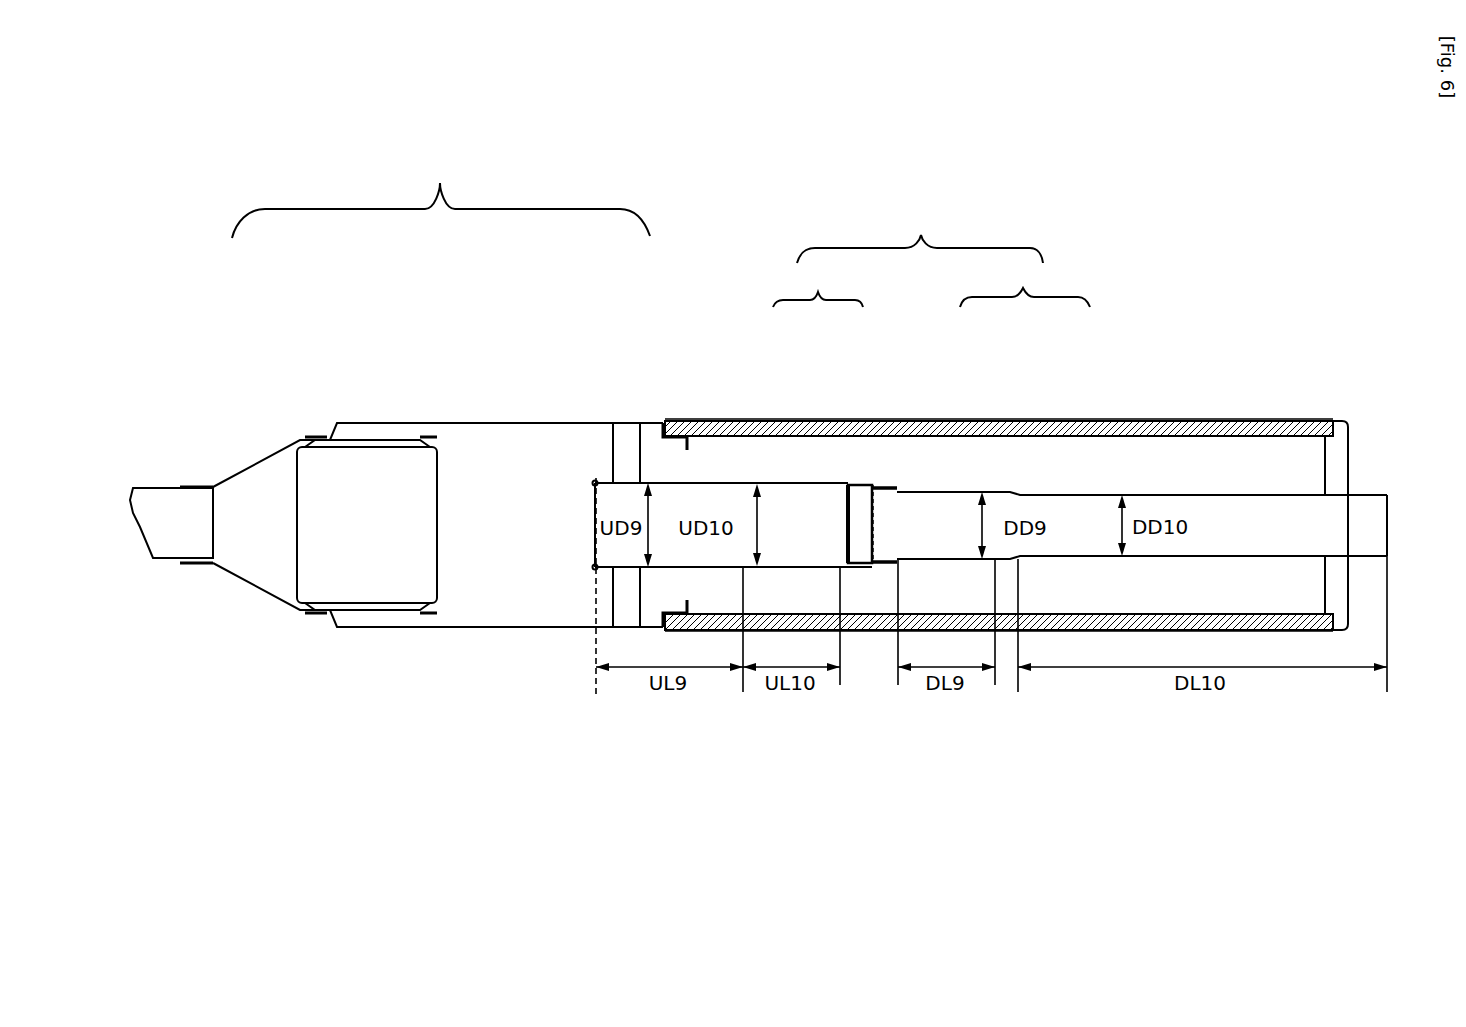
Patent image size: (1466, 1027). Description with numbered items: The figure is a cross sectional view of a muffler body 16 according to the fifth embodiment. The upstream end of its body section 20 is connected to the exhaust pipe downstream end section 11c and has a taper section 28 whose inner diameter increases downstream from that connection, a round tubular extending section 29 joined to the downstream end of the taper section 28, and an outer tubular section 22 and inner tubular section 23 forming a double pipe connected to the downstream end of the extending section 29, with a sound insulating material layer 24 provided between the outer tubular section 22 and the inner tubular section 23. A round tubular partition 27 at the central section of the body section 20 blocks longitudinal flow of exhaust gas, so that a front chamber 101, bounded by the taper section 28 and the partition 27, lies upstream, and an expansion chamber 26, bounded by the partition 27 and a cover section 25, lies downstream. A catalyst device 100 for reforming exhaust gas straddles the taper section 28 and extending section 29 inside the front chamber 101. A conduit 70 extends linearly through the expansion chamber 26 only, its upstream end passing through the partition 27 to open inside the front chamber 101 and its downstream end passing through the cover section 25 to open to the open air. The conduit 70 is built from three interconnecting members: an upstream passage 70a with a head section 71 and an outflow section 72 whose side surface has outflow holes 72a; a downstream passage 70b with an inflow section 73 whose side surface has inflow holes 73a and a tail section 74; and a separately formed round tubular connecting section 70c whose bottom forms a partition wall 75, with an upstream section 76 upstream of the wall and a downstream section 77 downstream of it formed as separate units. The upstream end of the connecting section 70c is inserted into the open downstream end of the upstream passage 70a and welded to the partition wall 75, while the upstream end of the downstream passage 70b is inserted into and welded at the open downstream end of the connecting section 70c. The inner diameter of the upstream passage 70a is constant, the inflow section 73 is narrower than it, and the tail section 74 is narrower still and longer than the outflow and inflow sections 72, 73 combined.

The muffler body 16 is at (785, 157).
The body section 20 is at (441, 196).
The outer tubular section 22 is at (695, 420).
The inner tubular section 23 is at (712, 420).
The sound insulating material layer 24 is at (737, 420).
The cover section 25 is at (1348, 461).
The expansion chamber 26 is at (1233, 473).
The partition 27 is at (613, 455).
The taper section 28 is at (265, 460).
The extending section 29 is at (418, 440).
The catalyst device 100 is at (373, 465).
The front chamber 101 is at (500, 480).
The exhaust pipe downstream end section 11c is at (170, 490).
The conduit 70 is at (990, 388).
The upstream passage 70a is at (714, 468).
The downstream passage 70b is at (1163, 476).
The connecting section 70c is at (883, 468).
The head section 71 is at (750, 476).
The outflow section 72 is at (823, 487).
The outflow holes 72a is at (800, 487).
The inflow section 73 is at (923, 490).
The inflow holes 73a is at (955, 490).
The tail section 74 is at (1094, 490).
The partition wall 75 is at (852, 486).
The upstream section 76 is at (818, 288).
The downstream section 77 is at (1025, 284).